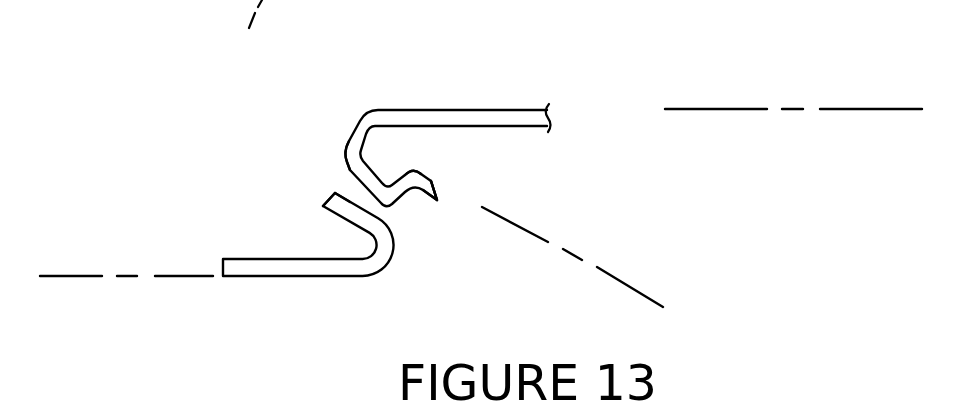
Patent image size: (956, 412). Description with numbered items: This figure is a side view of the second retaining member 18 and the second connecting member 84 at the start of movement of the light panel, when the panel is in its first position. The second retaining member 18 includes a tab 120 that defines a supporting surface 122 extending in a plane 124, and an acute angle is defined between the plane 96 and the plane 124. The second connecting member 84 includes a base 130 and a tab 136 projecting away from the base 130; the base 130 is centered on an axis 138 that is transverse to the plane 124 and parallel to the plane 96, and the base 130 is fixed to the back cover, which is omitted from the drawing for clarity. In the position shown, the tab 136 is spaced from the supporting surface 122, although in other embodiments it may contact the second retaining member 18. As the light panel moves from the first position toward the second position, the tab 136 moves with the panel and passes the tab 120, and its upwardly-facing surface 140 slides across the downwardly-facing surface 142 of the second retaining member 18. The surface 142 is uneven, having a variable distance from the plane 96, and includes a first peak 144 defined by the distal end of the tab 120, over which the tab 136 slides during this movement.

The second retaining member 18 is at (612, 56).
The second connecting member 84 is at (178, 325).
The plane 96 is at (826, 108).
The tab 120 is at (436, 186).
The supporting surface 122 is at (431, 182).
The plane 124 is at (632, 286).
The base 130 is at (316, 266).
The tab 136 is at (323, 212).
The axis 138 is at (124, 276).
The upwardly-facing surface 140 is at (338, 194).
The downwardly-facing surface 142 is at (347, 171).
The first peak 144 is at (436, 199).